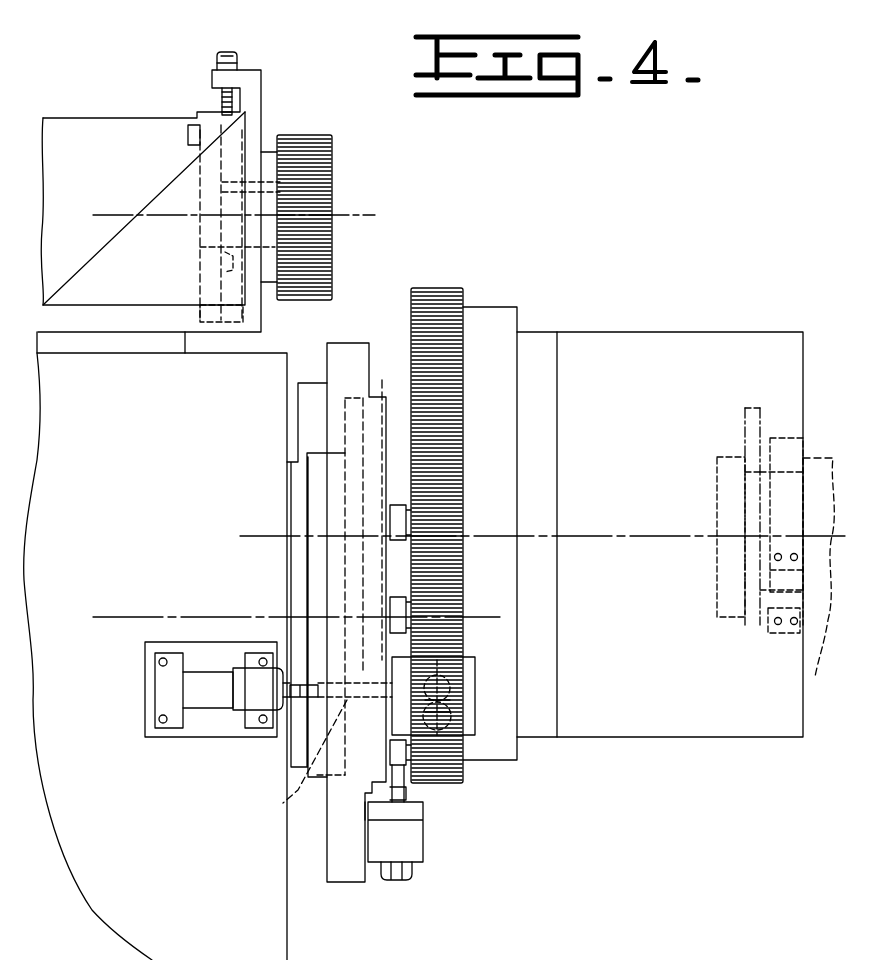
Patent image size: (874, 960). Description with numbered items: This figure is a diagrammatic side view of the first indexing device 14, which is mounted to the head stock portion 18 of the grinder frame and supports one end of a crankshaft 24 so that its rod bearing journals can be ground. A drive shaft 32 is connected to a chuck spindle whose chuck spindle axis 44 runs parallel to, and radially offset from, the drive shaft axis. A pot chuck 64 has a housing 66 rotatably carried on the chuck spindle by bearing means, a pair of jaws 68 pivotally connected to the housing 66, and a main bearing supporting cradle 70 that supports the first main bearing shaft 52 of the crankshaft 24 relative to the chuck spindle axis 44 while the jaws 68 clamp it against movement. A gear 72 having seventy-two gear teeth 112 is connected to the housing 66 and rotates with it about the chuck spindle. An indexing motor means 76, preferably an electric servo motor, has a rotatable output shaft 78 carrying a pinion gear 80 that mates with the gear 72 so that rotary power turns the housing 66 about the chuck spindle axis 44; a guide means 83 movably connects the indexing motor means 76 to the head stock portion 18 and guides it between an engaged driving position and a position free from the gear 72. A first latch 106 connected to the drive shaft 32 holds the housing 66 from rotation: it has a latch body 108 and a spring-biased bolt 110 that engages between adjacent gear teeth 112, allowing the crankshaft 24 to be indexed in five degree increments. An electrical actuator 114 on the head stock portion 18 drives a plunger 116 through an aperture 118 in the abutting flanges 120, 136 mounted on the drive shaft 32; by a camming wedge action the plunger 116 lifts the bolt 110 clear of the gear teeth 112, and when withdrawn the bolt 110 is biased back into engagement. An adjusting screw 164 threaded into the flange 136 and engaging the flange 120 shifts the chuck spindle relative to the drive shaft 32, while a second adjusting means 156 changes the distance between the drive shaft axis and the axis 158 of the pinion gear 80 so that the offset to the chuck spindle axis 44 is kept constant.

The first indexing device 14 is at (563, 216).
The head stock portion 18 is at (166, 441).
The crankshaft 24 is at (823, 577).
The drive shaft 32 is at (298, 504).
The chuck spindle axis 44 is at (636, 535).
The first main bearing shaft 52 is at (805, 650).
The pot chuck 64 is at (806, 462).
The housing 66 is at (612, 332).
The jaws 68 is at (788, 438).
The main bearing supporting cradle 70 is at (775, 640).
The gear 72 is at (452, 288).
The indexing motor means 76 is at (76, 110).
The rotatable output shaft 78 is at (222, 268).
The pinion gear 80 is at (325, 205).
The guide means 83 is at (31, 344).
The first latch 106 is at (487, 727).
The latch body 108 is at (475, 678).
The bolt 110 is at (485, 706).
The gear teeth 112 is at (453, 570).
The electrical actuator 114 is at (186, 741).
The plunger 116 is at (298, 703).
The aperture 118 is at (272, 808).
The flange 120 is at (383, 770).
The flange 136 is at (348, 882).
The second adjusting means 156 is at (245, 61).
The axis of the pinion gear 158 is at (375, 215).
The adjusting screw 164 is at (412, 870).